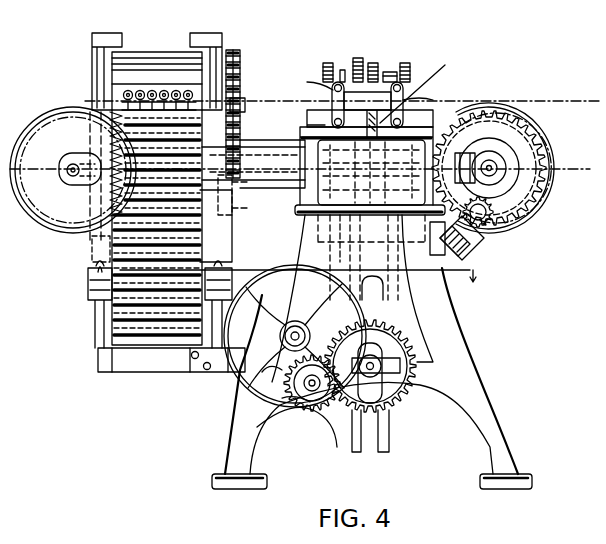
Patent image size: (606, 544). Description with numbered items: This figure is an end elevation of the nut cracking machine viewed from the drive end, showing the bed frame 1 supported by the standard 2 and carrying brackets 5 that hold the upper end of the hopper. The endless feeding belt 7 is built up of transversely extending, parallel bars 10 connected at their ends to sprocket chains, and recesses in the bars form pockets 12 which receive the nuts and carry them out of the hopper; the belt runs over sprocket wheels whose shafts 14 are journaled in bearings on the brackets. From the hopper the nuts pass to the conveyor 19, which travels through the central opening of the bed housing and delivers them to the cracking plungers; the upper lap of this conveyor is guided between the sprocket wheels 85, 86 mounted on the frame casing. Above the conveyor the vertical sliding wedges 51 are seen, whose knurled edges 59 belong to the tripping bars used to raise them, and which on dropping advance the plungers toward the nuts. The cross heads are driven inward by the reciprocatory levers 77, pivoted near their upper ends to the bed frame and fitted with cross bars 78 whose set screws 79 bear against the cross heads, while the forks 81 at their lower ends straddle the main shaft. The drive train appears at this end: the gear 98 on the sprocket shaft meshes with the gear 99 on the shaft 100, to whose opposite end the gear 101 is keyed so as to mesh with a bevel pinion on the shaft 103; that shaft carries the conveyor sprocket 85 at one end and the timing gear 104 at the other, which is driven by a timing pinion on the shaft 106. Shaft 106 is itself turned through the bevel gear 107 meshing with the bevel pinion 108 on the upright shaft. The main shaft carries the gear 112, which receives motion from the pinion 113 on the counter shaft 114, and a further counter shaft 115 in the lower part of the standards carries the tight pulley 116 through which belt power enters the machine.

The bed frame 1 is at (318, 210).
The standard 2 is at (270, 436).
The brackets 5 is at (304, 336).
The endless feeding belt 7 is at (130, 328).
The bars 10 is at (124, 78).
The pockets 12 is at (160, 90).
The shafts 14 is at (243, 92).
The conveyor 19 is at (460, 104).
The sliding wedges 51 is at (375, 70).
The knurled edges 59 is at (339, 68).
The reciprocatory levers 77 is at (335, 262).
The cross bars 78 is at (417, 84).
The set screws 79 is at (433, 80).
The forks 81 is at (398, 446).
The sprocket wheel 85 is at (545, 148).
The sprocket wheel 86 is at (52, 222).
The gear 98 is at (241, 60).
The gear 99 is at (236, 196).
The shaft 100 is at (263, 165).
The gear 101 is at (510, 108).
The shaft 103 is at (540, 180).
The timing gear 104 is at (535, 165).
The shaft 106 is at (520, 208).
The bevel gear 107 is at (520, 226).
The bevel pinion 108 is at (500, 246).
The gear 112 is at (400, 408).
The pinion 113 is at (334, 450).
The counter shaft 114 is at (316, 412).
The counter shaft 115 is at (262, 392).
The tight pulley 116 is at (258, 374).